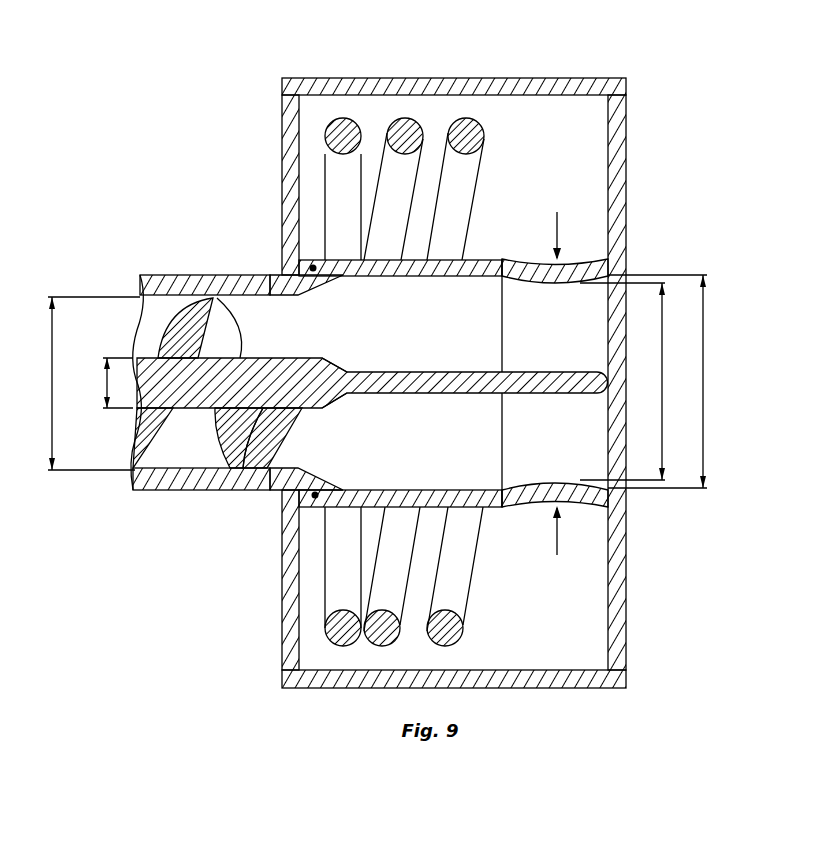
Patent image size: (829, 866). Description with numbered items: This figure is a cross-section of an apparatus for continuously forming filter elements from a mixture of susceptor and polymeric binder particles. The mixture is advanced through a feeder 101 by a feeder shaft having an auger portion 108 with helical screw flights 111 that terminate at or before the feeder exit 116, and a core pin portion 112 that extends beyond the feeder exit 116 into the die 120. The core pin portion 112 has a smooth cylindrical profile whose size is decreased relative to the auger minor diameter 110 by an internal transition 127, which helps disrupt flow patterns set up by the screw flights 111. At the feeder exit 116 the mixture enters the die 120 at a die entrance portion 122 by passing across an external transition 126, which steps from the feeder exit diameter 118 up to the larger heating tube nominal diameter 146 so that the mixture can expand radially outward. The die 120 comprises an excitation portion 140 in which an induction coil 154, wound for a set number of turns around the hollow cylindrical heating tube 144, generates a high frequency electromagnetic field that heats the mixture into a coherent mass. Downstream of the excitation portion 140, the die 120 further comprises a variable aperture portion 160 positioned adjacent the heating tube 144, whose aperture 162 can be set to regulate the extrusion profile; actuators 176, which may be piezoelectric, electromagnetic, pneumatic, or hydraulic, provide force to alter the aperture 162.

The feeder 101 is at (143, 489).
The auger portion 108 is at (178, 410).
The auger minor diameter 110 is at (102, 390).
The screw flights 111 is at (230, 457).
The core pin portion 112 is at (550, 378).
The feeder exit 116 is at (272, 283).
The feeder exit diameter 118 is at (54, 437).
The die 120 is at (592, 82).
The die entrance portion 122 is at (344, 277).
The external transition 126 is at (280, 275).
The internal transition 127 is at (327, 400).
The excitation portion 140 is at (439, 339).
The heating tube 144 is at (378, 491).
The heating tube nominal diameter 146 is at (705, 367).
The induction coil 154 is at (439, 381).
The variable aperture portion 160 is at (605, 197).
The aperture 162 is at (660, 358).
The actuators 176 is at (557, 224).